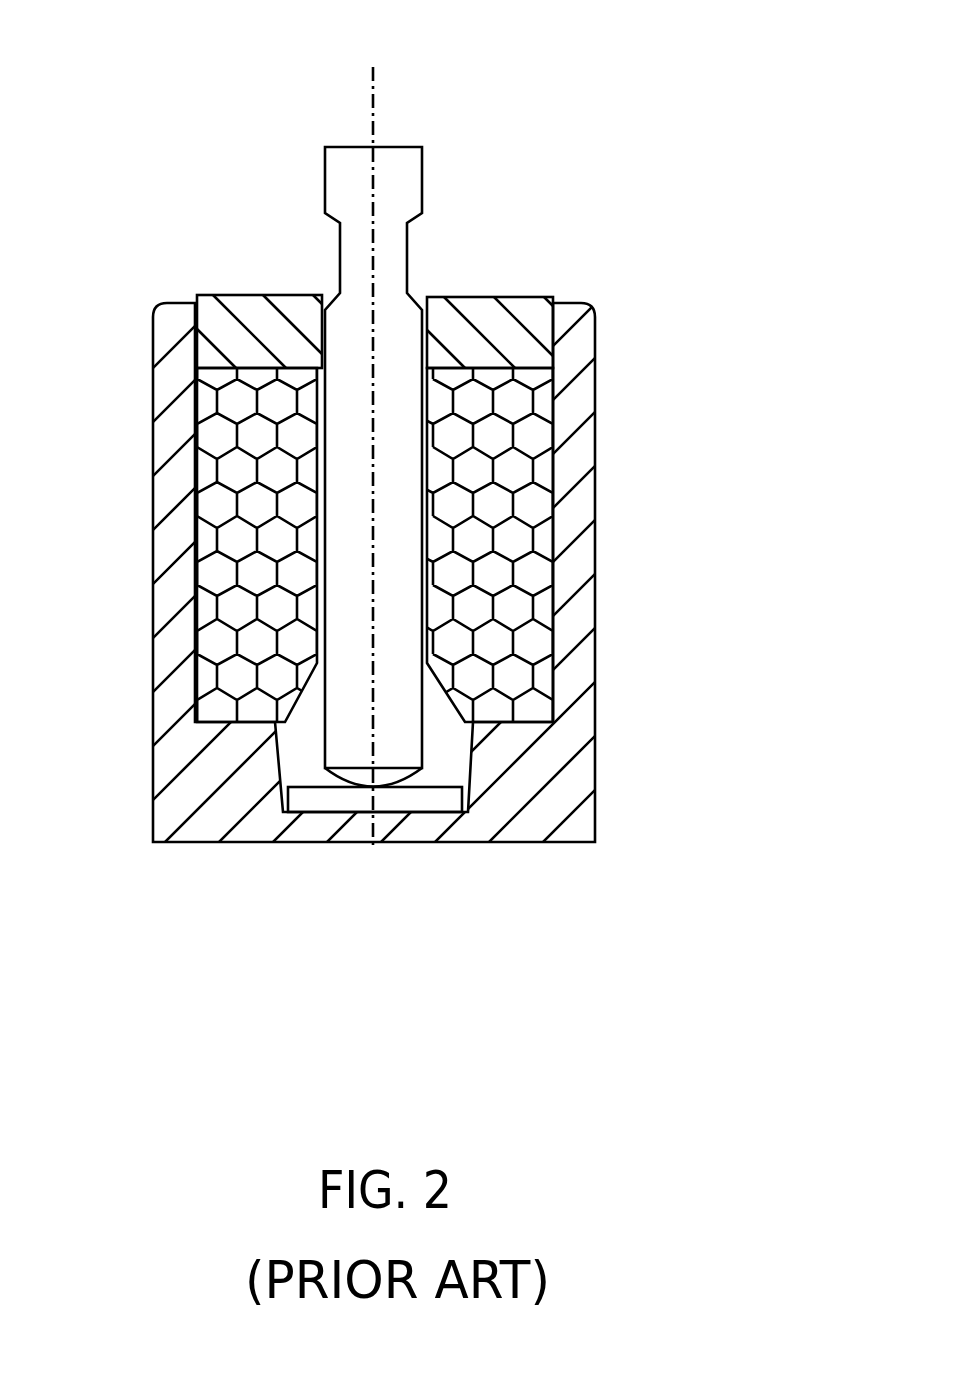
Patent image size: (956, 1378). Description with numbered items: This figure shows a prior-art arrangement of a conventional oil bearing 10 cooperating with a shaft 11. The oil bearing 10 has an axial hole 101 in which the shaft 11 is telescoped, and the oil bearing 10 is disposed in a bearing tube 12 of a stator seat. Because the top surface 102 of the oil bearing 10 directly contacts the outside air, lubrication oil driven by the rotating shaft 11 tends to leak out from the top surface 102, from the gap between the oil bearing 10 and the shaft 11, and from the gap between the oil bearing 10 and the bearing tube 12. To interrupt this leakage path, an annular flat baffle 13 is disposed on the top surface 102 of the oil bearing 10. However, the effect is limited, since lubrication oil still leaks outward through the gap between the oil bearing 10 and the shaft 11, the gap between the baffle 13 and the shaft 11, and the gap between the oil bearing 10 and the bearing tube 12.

The oil bearing 10 is at (513, 397).
The axial hole 101 is at (321, 355).
The top surface 102 is at (462, 365).
The shaft 11 is at (400, 157).
The bearing tube 12 is at (580, 400).
The annular flat baffle 13 is at (212, 312).